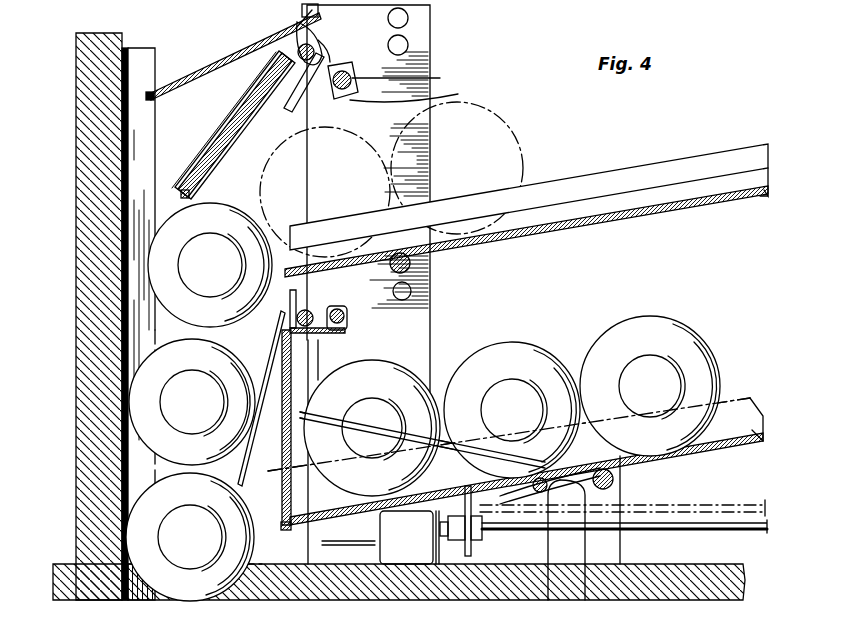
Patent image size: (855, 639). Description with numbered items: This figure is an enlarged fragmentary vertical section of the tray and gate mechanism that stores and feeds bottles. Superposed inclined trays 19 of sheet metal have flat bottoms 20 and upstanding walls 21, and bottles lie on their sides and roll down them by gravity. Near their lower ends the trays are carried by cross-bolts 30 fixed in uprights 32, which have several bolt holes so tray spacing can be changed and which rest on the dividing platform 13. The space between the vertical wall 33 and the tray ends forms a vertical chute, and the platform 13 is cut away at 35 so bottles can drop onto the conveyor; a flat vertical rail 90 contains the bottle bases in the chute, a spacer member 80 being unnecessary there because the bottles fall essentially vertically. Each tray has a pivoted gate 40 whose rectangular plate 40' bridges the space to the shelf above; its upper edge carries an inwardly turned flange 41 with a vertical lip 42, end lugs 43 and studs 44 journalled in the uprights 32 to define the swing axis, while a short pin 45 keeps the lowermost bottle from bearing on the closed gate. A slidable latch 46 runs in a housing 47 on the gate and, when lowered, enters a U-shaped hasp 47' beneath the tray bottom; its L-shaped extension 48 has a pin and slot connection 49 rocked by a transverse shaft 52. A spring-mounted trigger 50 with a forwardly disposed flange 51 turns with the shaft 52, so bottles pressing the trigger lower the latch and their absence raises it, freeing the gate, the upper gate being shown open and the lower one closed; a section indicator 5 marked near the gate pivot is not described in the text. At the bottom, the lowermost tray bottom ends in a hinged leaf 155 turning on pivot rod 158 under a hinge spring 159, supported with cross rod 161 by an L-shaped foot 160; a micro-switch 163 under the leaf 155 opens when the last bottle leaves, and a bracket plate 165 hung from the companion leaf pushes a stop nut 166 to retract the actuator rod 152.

The dividing platform 13 is at (699, 576).
The vertical wall 33 is at (76, 163).
The vertical rail 90 is at (146, 139).
The cut-away 35 is at (247, 596).
The cross-bolt 30 is at (412, 268).
The upright 32 is at (416, 134).
The upstanding wall 21 is at (709, 157).
The bottom 20 is at (695, 211).
The tray 19 is at (614, 227).
The spacer member 80 is at (758, 195).
The gate 40 is at (235, 56).
The trigger member 50 is at (191, 81).
The U-shaped hasp 47' is at (235, 125).
The gate plate 40' is at (230, 269).
The rectangular flange 41 is at (301, 82).
The pin 45 is at (302, 100).
The pin and slot connection 49 is at (299, 22).
The L-shaped extension 48 is at (318, 12).
The forwardly disposed flange 51 is at (316, 40).
The transverse shaft 52 is at (325, 52).
The lip 42 is at (331, 70).
The lug 43 is at (409, 79).
The stud 44 is at (417, 93).
The latch 46 is at (185, 193).
The pivot axis 5 is at (272, 326).
The housing 47 is at (272, 427).
The leaf 155 is at (348, 543).
The micro-switch 163 is at (409, 537).
The stop nut 166 is at (468, 515).
The bracket plate 165 is at (465, 545).
The actuator rod 152 is at (762, 534).
The L-shaped foot 160 is at (622, 553).
The cross rod 161 is at (615, 483).
The pivot rod 158 is at (548, 600).
The hinge spring 159 is at (586, 600).